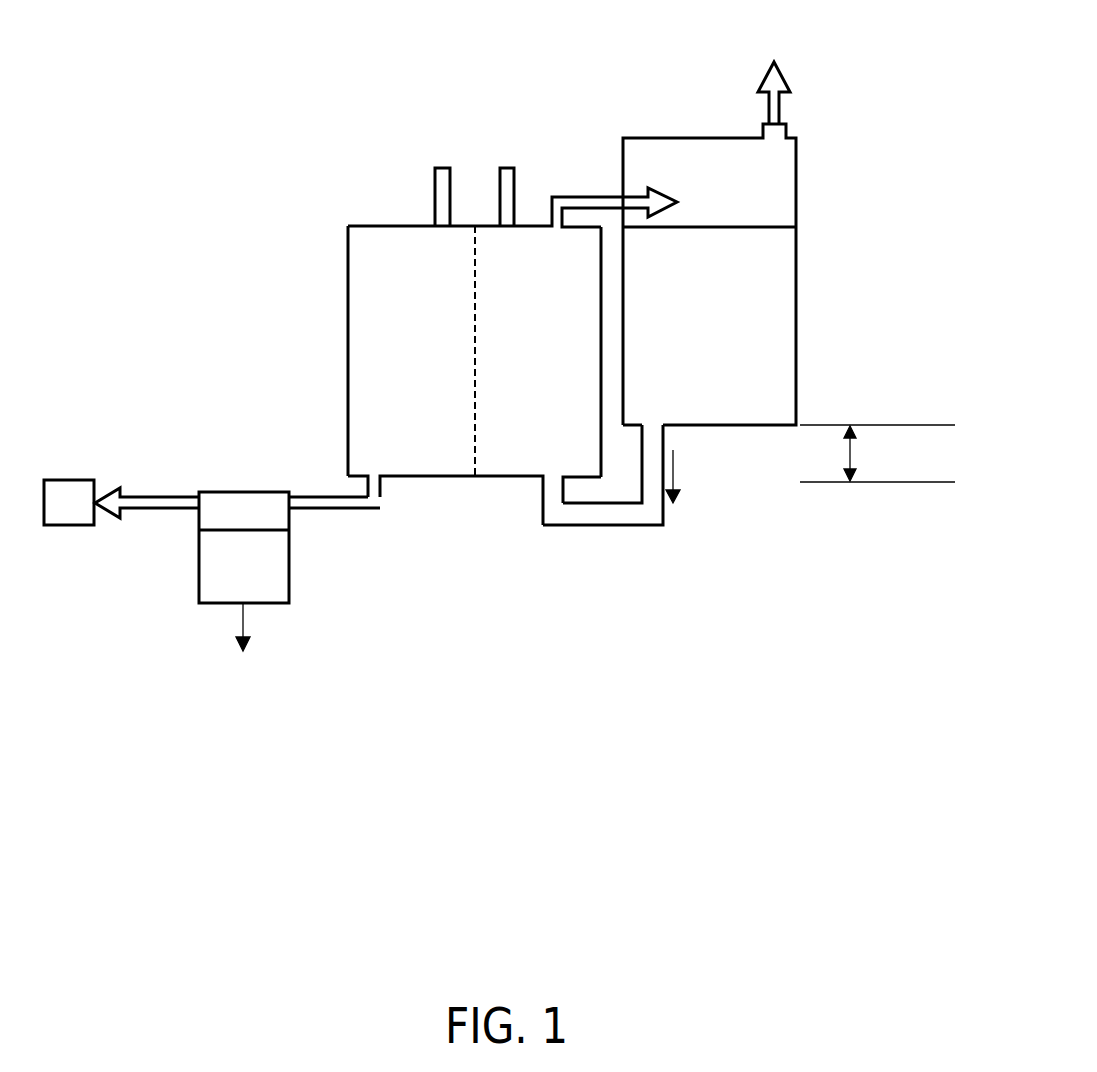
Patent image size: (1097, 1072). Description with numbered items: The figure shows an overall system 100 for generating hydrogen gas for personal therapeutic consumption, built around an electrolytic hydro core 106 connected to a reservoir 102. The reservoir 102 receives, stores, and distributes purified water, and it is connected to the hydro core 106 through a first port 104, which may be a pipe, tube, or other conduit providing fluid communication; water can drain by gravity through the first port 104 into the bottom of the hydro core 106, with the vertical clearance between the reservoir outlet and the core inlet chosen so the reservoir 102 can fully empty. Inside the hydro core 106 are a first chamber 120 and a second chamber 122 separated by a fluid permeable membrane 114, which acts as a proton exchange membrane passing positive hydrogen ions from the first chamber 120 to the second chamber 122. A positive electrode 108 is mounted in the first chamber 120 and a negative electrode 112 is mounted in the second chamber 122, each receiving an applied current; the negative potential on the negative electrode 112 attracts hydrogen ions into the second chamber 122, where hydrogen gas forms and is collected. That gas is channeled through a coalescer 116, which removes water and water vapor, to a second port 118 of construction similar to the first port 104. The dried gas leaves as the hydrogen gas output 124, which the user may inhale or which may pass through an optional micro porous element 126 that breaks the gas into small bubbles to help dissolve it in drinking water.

The system 100 is at (207, 186).
The reservoir 102 is at (796, 336).
The first port 104 is at (538, 478).
The hydro core 106 is at (348, 273).
The positive electrode 108 is at (507, 140).
The negative electrode 112 is at (442, 138).
The fluid permeable membrane 114 is at (477, 310).
The coalescer 116 is at (289, 568).
The second port 118 is at (382, 488).
The first chamber 120 is at (560, 462).
The second chamber 122 is at (437, 462).
The hydrogen gas output 124 is at (172, 510).
The micro porous element 126 is at (67, 490).